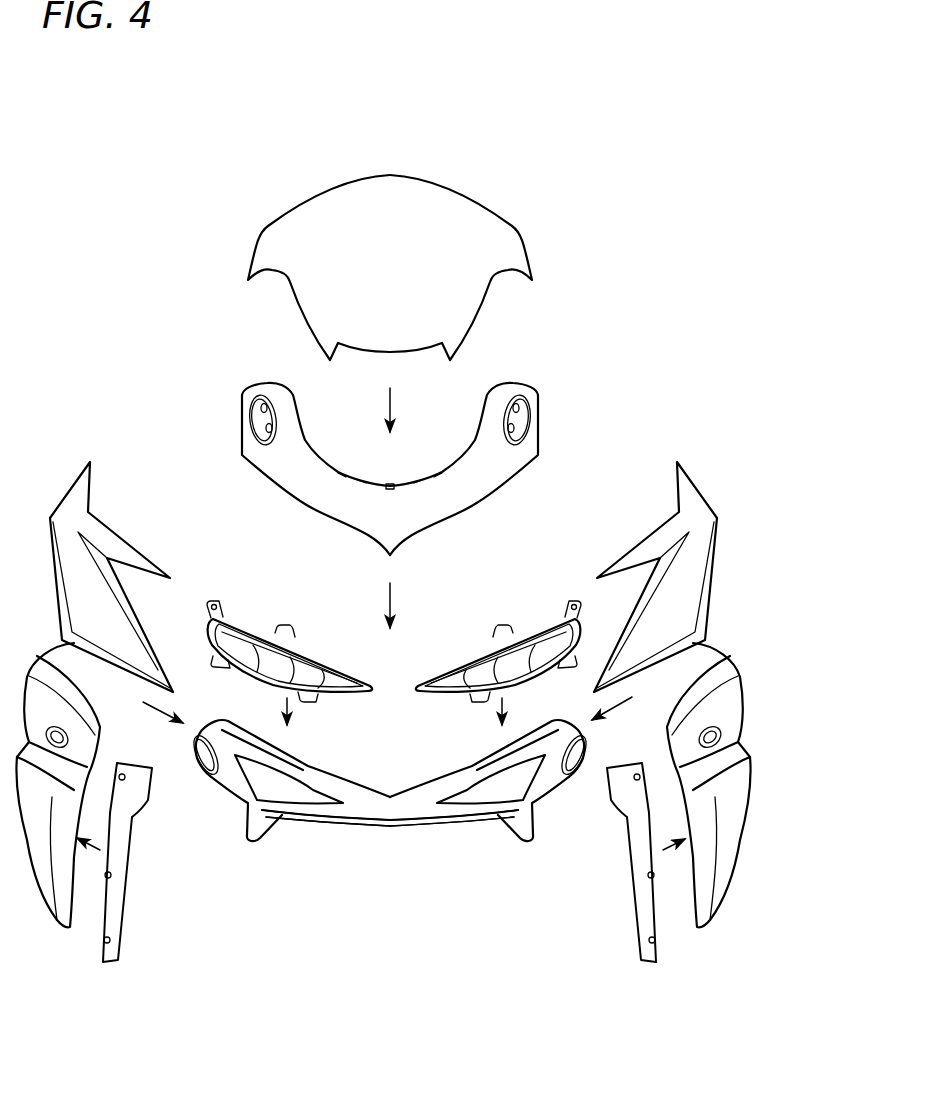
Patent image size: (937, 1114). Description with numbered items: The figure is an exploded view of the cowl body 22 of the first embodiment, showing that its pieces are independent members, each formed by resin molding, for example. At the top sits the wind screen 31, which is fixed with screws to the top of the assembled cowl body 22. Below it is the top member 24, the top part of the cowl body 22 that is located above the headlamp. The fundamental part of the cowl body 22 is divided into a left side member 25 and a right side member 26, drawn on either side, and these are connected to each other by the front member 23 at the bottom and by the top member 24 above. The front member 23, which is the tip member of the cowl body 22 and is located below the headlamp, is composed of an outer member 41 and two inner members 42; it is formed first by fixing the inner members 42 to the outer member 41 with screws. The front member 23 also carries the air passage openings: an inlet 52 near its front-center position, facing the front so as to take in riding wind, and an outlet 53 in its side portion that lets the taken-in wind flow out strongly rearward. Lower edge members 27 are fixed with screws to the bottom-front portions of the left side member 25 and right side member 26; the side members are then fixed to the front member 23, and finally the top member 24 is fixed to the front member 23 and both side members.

The cowl body 22 is at (155, 262).
The wind screen 31 is at (390, 185).
The top member 24 is at (490, 480).
The right side member 26 is at (72, 592).
The left side member 25 is at (698, 592).
The inner member 42 is at (315, 650).
The front member 23 is at (399, 811).
The outer member 41 is at (407, 822).
The inlet 52 is at (313, 800).
The outlet 53 is at (197, 753).
The lower edge member 27 is at (123, 830).